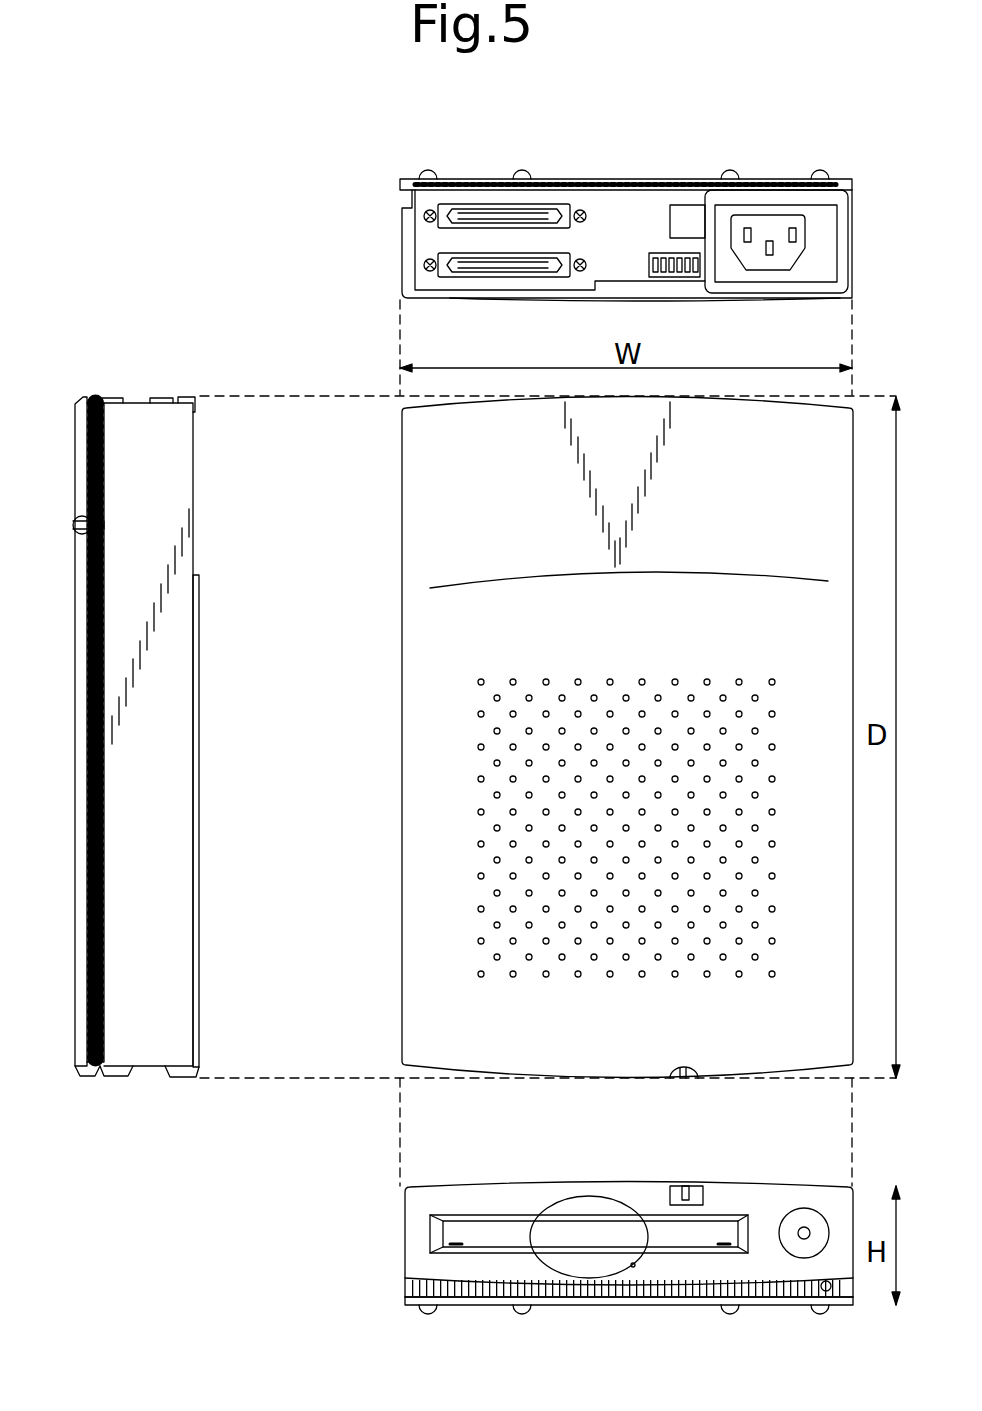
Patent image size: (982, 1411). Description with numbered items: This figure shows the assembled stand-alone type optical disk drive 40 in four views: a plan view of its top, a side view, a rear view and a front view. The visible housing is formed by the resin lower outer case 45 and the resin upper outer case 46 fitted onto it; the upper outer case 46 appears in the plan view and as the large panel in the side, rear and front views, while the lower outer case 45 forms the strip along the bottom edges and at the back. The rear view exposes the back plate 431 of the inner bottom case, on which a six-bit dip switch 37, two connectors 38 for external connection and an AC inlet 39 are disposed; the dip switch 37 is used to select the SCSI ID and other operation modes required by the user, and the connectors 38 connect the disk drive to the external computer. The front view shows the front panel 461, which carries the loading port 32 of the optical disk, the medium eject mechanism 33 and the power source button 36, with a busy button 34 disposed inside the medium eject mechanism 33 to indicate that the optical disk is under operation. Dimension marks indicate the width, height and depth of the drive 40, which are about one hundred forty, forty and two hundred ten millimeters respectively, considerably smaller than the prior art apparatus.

The stand-alone type optical disk drive 40 is at (216, 244).
The lower outer case 45 is at (400, 184).
The upper outer case 46 is at (412, 250).
The connectors for external connection 38 is at (500, 262).
The back plate 431 is at (628, 232).
The AC inlet 39 is at (768, 228).
The dip switch 37 is at (680, 277).
The loading port 32 is at (580, 1232).
The medium eject mechanism 33 is at (678, 1080).
The busy button 34 is at (690, 1080).
The power source button 36 is at (806, 1210).
The front panel 461 is at (425, 1262).